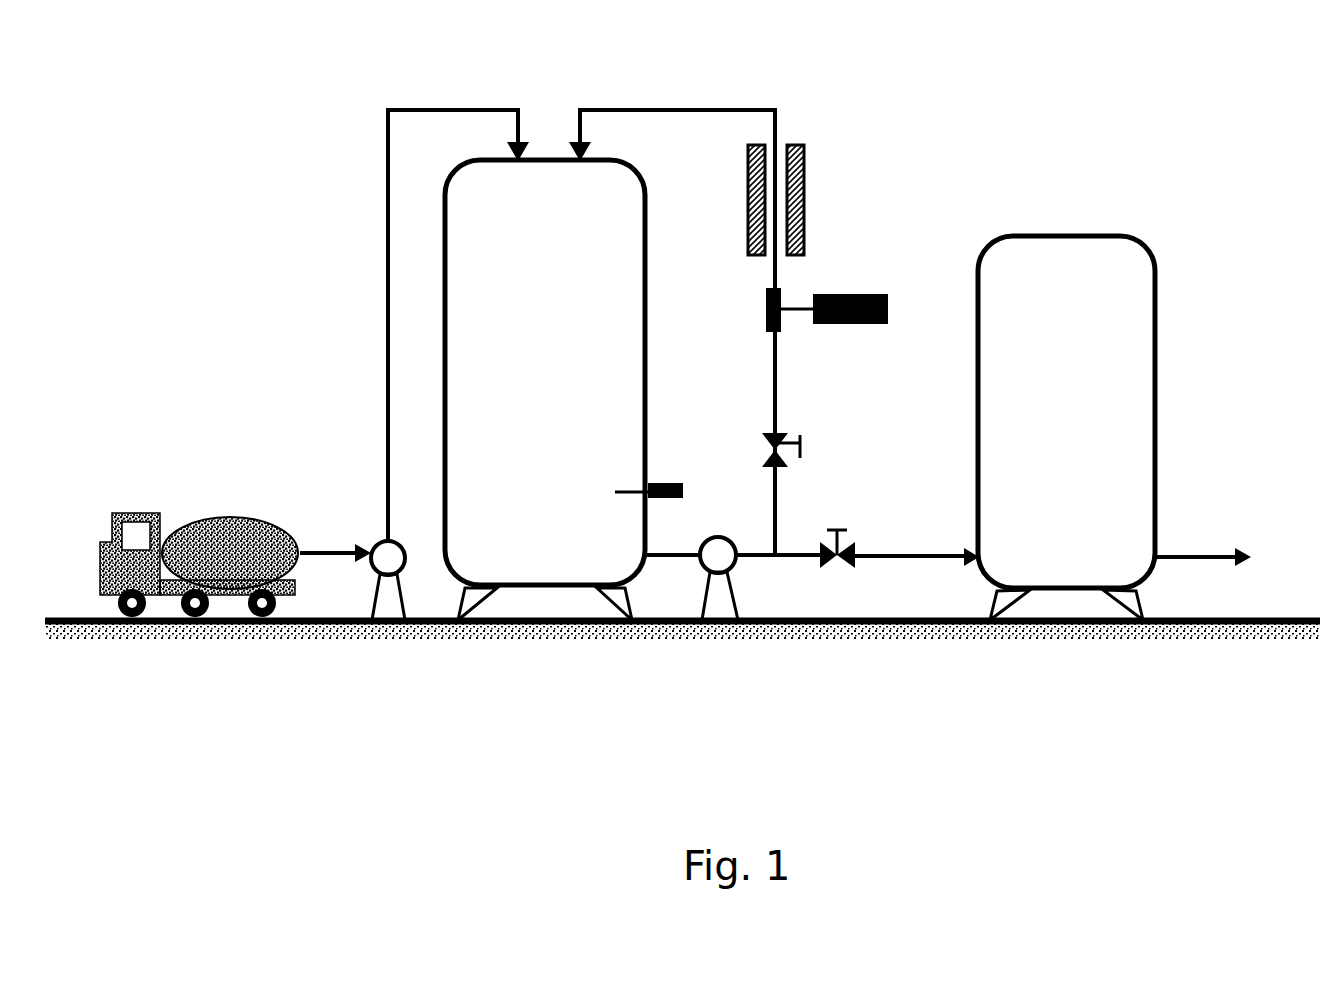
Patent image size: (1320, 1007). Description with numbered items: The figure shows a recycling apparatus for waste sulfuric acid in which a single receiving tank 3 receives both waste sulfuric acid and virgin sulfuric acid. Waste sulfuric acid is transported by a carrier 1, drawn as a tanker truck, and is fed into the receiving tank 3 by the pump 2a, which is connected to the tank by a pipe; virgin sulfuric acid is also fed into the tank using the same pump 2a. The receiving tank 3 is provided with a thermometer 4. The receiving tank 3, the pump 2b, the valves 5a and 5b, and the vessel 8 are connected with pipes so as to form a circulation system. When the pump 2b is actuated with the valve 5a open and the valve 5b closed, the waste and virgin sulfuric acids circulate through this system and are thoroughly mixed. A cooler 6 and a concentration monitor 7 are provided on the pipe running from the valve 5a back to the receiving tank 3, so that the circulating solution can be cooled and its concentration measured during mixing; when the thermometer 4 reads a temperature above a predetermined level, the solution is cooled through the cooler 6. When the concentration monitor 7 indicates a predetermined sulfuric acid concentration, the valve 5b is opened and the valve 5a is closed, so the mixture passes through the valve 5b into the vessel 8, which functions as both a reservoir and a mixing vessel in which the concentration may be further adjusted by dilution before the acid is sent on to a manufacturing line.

The carrier 1 is at (217, 520).
The pump 2a is at (383, 548).
The pump 2b is at (722, 567).
The receiving tank 3 is at (475, 217).
The thermometer 4 is at (670, 483).
The valve 5a is at (803, 443).
The valve 5b is at (840, 570).
The cooler 6 is at (778, 185).
The concentration monitor 7 is at (850, 324).
The vessel 8 is at (1095, 375).